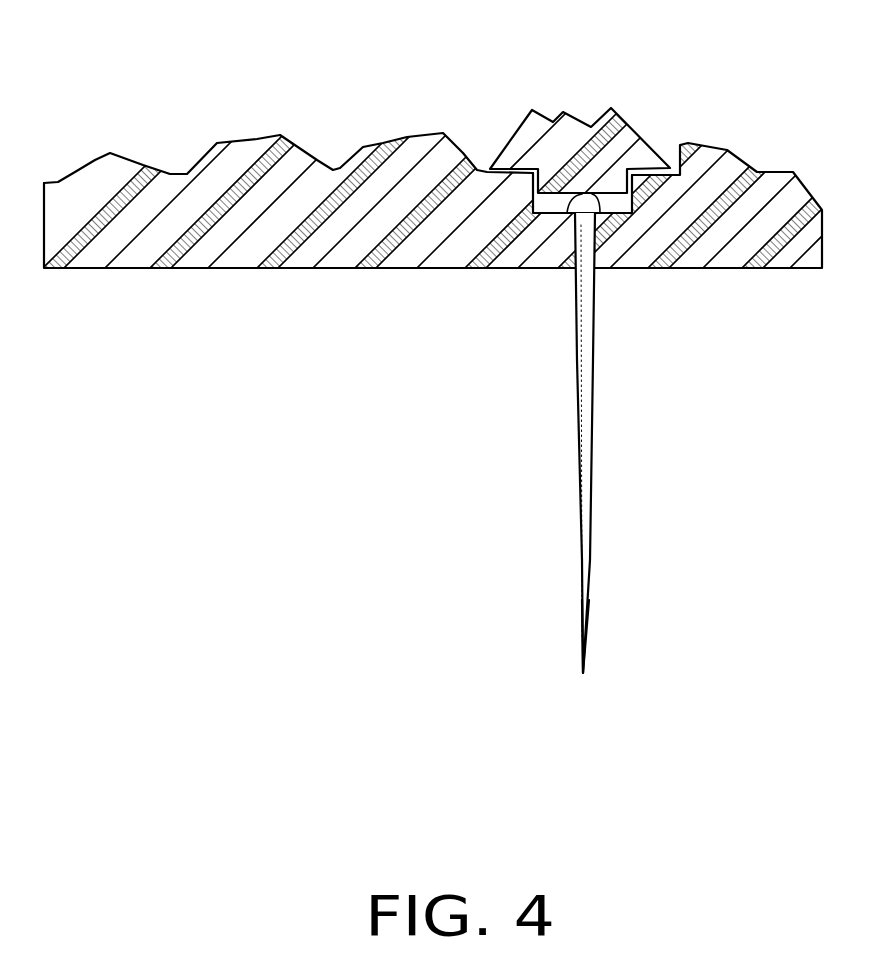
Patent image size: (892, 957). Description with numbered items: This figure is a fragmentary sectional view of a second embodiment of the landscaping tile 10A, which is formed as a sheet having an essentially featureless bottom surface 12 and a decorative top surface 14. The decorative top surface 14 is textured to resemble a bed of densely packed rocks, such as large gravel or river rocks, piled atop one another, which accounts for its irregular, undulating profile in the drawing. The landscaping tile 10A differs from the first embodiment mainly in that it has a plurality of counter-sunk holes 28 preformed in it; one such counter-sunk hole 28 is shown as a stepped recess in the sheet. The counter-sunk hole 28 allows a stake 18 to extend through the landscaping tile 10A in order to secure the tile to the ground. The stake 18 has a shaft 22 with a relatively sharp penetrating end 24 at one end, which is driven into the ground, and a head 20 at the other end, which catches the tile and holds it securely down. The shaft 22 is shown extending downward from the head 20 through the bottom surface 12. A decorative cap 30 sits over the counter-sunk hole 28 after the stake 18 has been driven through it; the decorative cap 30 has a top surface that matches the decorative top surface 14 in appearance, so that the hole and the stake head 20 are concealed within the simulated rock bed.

The landscaping tile 10A is at (457, 342).
The bottom surface 12 is at (457, 198).
The decorative top surface 14 is at (177, 172).
The stake 18 is at (599, 365).
The head 20 is at (603, 183).
The shaft 22 is at (577, 360).
The penetrating end 24 is at (583, 667).
The counter-sunk hole 28 is at (570, 215).
The decorative cap 30 is at (578, 128).